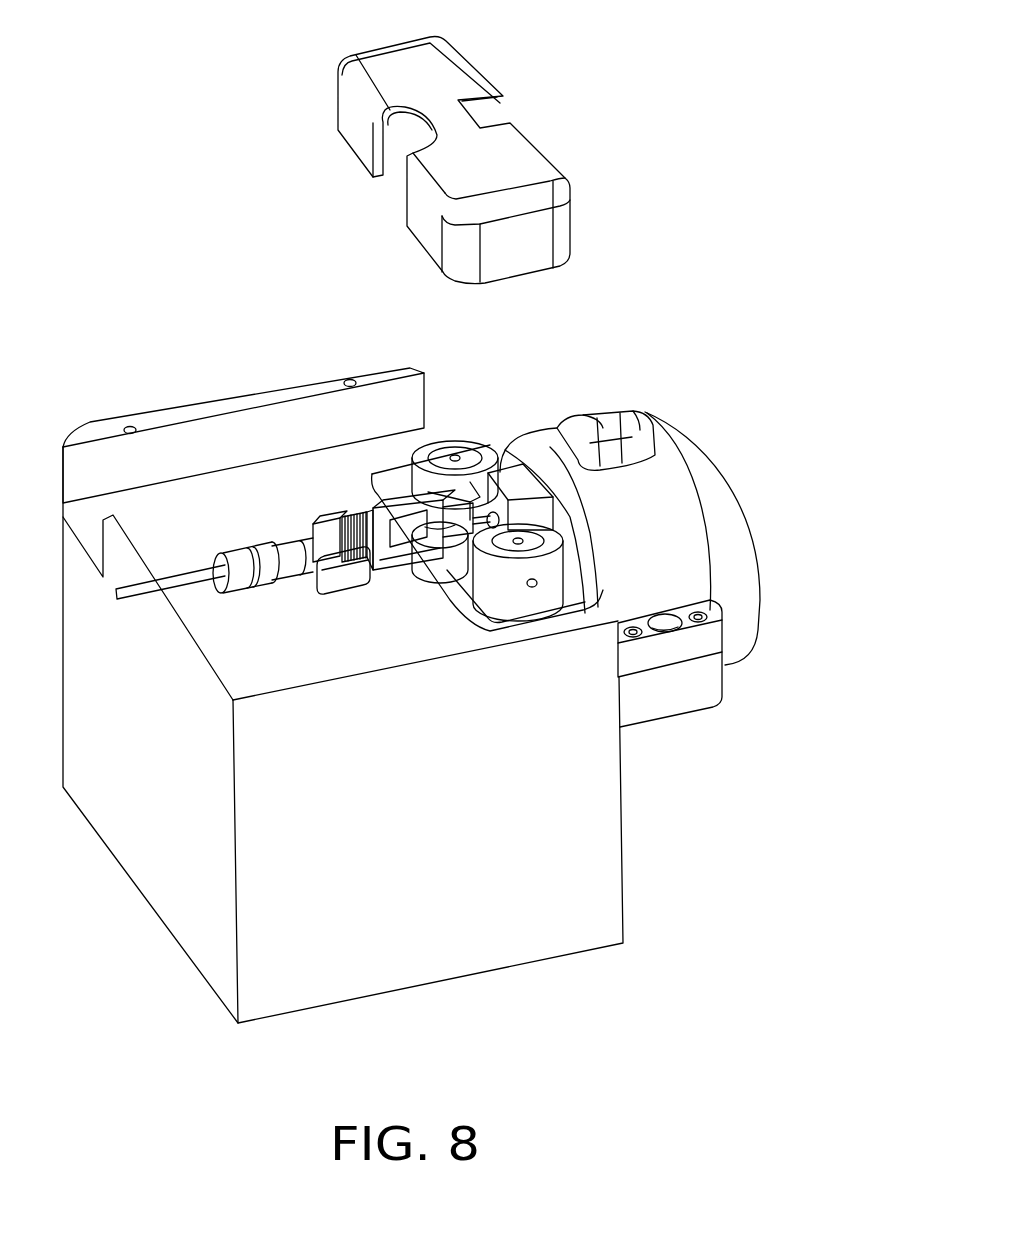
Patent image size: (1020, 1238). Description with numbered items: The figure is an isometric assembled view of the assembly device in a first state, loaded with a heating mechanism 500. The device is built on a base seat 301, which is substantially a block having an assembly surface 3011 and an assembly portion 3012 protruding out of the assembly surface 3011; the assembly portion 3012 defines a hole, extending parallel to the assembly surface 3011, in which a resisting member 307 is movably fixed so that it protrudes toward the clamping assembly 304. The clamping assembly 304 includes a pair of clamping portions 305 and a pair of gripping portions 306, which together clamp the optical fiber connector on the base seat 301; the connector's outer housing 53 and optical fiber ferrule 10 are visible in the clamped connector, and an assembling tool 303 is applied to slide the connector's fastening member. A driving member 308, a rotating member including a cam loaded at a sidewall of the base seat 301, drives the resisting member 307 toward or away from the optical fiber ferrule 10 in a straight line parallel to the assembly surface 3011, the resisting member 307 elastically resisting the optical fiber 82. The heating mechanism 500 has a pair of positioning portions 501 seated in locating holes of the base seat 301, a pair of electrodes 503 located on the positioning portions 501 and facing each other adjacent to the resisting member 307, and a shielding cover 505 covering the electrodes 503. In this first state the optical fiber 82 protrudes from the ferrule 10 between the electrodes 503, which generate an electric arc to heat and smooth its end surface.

The optical fiber ferrule 10 is at (563, 570).
The outer housing 53 is at (340, 525).
The optical fiber 82 is at (480, 500).
The base seat 301 is at (517, 943).
The assembling tool 303 is at (383, 513).
The clamping assembly 304 is at (735, 755).
The clamping portions 305 is at (423, 558).
The gripping portions 306 is at (343, 578).
The resisting member 307 is at (557, 518).
The driving member 308 is at (650, 500).
The heating mechanism 500 is at (672, 113).
The positioning portions 501 is at (465, 447).
The electrodes 503 is at (473, 487).
The shielding cover 505 is at (515, 172).
The assembly surface 3011 is at (150, 535).
The assembly portion 3012 is at (545, 515).